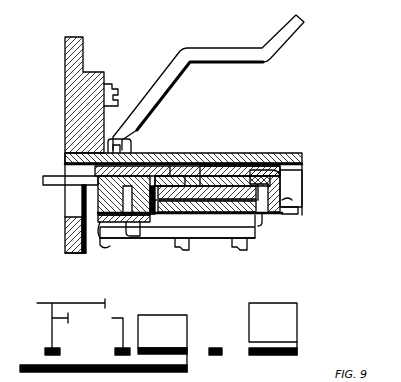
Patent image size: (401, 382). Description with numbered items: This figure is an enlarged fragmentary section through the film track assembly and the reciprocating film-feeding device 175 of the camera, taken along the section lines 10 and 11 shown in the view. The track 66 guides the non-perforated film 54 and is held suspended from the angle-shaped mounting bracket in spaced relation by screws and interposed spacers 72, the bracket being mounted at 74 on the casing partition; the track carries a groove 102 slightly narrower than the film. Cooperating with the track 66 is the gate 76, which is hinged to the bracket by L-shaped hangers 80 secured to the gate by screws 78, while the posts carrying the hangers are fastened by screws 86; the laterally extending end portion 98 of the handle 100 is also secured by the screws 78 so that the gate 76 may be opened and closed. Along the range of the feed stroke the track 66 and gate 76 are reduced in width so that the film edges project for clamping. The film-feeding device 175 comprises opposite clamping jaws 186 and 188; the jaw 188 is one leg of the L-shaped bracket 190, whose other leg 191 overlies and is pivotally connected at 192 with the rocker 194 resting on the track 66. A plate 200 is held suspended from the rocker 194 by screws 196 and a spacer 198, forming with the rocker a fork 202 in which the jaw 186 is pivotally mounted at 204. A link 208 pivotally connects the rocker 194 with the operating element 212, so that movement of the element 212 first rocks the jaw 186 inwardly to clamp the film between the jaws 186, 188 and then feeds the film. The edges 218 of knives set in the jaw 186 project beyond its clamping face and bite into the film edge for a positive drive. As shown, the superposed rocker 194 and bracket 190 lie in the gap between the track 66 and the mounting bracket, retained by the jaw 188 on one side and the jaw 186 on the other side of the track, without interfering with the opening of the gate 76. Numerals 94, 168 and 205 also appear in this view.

The section line 10- 10 is at (62, 162).
The section line 11- 11 is at (46, 198).
The film 54 is at (210, 238).
The track 66 is at (265, 216).
The spacers 72 is at (283, 182).
The mounting of bracket 74 is at (112, 86).
The gate 76 is at (256, 224).
The screws 78 is at (180, 247).
The hangers 80 is at (139, 237).
The screws 86 is at (128, 142).
The side wall 94 is at (72, 60).
The end portion of handle 98 is at (205, 240).
The handle 100 is at (250, 58).
The groove 102 is at (242, 158).
The inner layer 168 is at (222, 186).
The film-feeding device 175 is at (290, 204).
The clamping jaw 186 is at (128, 223).
The clamping jaw 188 is at (286, 214).
The L-shaped bracket 190 is at (278, 168).
The leg of bracket 191 is at (200, 178).
The pivot 192 is at (160, 174).
The rocker 194 is at (175, 181).
The screws 196 is at (86, 248).
The spacer 198 is at (100, 198).
The plate 200 is at (106, 244).
The fork 202 is at (100, 214).
The pivot 204 is at (157, 210).
The layer 205 is at (236, 170).
The link 208 is at (218, 170).
The operating element 212 is at (50, 192).
The edges of knives 218 is at (170, 164).